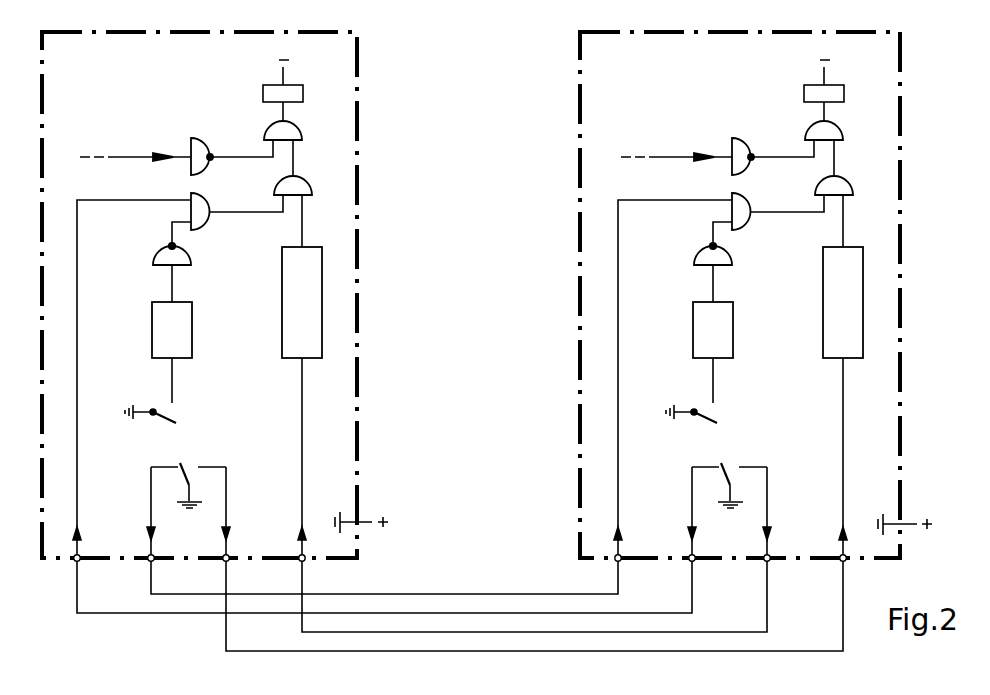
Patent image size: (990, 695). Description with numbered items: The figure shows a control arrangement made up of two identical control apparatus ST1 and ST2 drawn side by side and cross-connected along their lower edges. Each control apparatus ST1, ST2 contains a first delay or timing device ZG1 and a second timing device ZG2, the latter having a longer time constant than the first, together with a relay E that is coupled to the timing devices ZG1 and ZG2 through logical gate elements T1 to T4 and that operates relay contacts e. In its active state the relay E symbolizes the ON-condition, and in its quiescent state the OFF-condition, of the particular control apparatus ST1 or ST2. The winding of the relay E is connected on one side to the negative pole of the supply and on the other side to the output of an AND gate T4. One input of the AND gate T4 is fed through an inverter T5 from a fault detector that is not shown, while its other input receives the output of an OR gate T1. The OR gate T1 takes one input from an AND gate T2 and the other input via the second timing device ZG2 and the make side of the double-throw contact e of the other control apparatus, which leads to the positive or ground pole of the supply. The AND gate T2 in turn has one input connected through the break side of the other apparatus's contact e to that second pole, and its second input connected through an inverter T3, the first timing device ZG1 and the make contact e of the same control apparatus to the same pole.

The control apparatus ST1 is at (199, 295).
The control apparatus ST2 is at (740, 295).
The relay E is at (543, 90).
The OR gate T1 is at (546, 193).
The AND gate T2 is at (427, 355).
The inverter T3 is at (458, 272).
The AND gate T4 is at (570, 130).
The inverter T5 is at (447, 150).
The first timing device ZG1 is at (442, 352).
The second timing device ZG2 is at (572, 387).
The relay contacts e is at (446, 463).